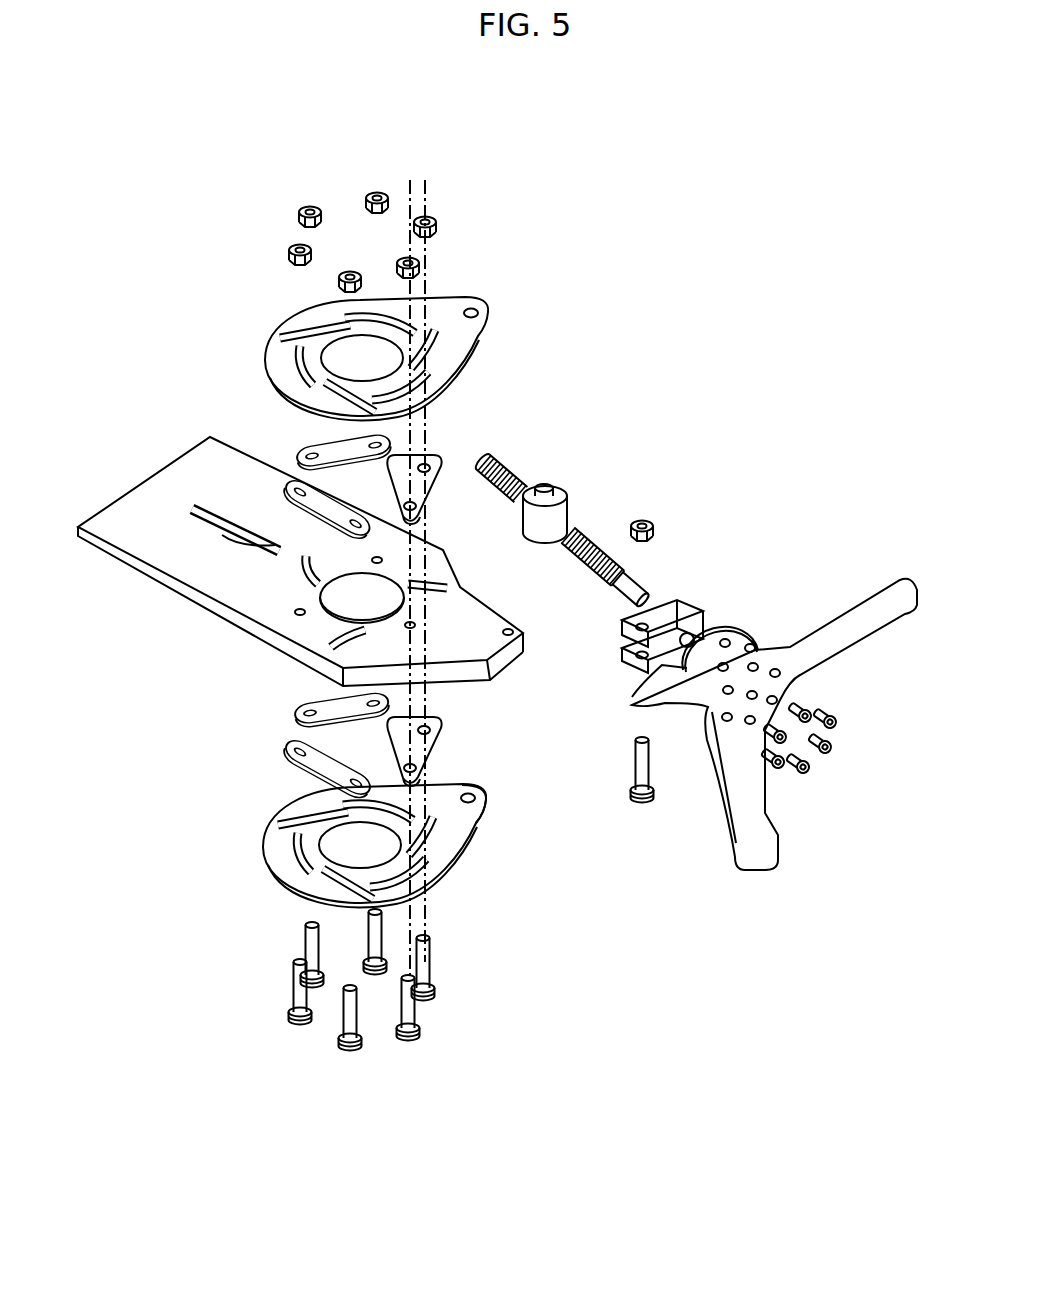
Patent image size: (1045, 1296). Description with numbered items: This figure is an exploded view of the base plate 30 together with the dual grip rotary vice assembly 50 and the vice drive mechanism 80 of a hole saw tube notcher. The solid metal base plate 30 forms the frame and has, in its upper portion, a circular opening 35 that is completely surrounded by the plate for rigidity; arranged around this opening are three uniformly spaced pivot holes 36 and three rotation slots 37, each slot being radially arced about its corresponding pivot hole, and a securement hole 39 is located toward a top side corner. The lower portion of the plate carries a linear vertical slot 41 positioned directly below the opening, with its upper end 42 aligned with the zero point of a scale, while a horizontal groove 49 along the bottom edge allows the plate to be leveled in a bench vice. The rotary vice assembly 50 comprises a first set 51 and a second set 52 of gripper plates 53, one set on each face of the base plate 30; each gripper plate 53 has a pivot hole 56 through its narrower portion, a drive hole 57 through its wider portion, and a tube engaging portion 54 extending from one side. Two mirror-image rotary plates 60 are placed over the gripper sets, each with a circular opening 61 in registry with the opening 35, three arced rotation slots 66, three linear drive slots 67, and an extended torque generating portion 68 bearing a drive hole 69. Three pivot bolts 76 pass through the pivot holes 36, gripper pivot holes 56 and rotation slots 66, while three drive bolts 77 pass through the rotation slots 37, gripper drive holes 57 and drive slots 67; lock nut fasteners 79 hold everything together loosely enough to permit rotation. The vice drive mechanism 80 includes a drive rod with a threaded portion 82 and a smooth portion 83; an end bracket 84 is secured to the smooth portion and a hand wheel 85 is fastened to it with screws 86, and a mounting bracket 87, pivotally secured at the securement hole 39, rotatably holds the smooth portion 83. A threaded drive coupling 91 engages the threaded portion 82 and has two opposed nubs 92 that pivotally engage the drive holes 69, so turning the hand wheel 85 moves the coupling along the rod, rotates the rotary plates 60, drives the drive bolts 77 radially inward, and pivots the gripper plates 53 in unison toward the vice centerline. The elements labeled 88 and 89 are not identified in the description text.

The base plate 30 is at (307, 579).
The circular opening 35 is at (355, 641).
The pivot holes 36 is at (297, 617).
The rotation slots 37 is at (343, 615).
The securement hole 39 is at (508, 629).
The vertical slot 41 is at (222, 535).
The upper end of slot 42 is at (258, 553).
The horizontal groove 49 is at (110, 555).
The dual grip rotary vice assembly 50 is at (387, 547).
The first set of gripper plates 51 is at (283, 765).
The second set of gripper plates 52 is at (443, 451).
The gripper plate 53 is at (448, 586).
The tube engaging portion 54 is at (395, 738).
The pivot hole 56 is at (415, 768).
The drive hole 57 is at (428, 725).
The rotary plate 60 is at (387, 612).
The circular opening 61 is at (376, 370).
The arced rotation slot 66 is at (293, 361).
The linear drive slot 67 is at (305, 332).
The torque generating portion 68 is at (473, 817).
The drive hole 69 is at (474, 796).
The pivot bolt 76 is at (412, 1042).
The drive bolt 77 is at (428, 1000).
The lock nut fasteners 79 is at (432, 220).
The vice drive mechanism 80 is at (695, 634).
The threaded portion 82 is at (596, 514).
The smooth portion 83 is at (630, 580).
The end bracket 84 is at (740, 646).
The hand wheel 85 is at (826, 650).
The screws 86 is at (820, 718).
The mounting bracket 87 is at (696, 615).
The clevis hole 88 is at (691, 637).
The pivot bolt 89 is at (643, 805).
The threaded drive coupling 91 is at (591, 494).
The nubs 92 is at (550, 492).